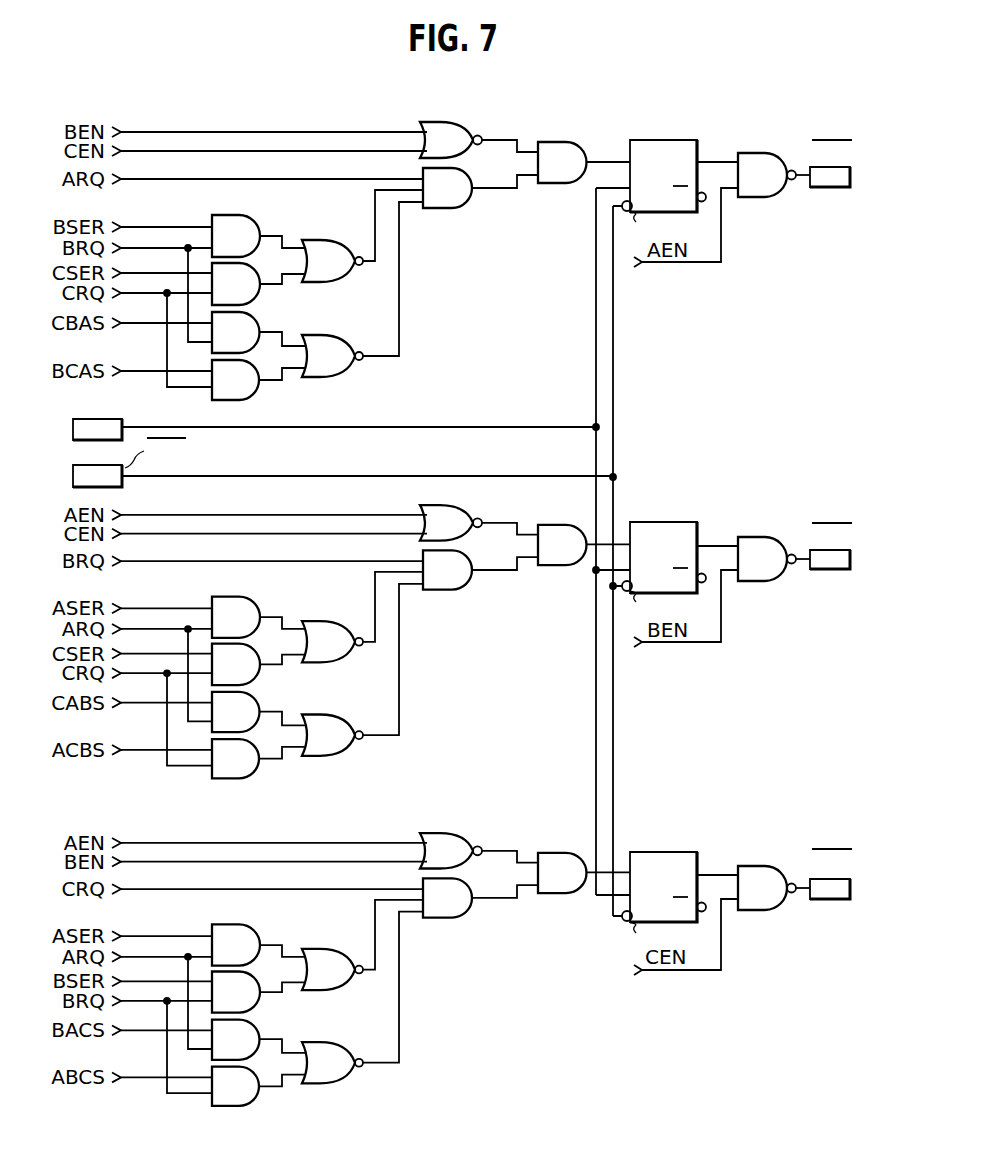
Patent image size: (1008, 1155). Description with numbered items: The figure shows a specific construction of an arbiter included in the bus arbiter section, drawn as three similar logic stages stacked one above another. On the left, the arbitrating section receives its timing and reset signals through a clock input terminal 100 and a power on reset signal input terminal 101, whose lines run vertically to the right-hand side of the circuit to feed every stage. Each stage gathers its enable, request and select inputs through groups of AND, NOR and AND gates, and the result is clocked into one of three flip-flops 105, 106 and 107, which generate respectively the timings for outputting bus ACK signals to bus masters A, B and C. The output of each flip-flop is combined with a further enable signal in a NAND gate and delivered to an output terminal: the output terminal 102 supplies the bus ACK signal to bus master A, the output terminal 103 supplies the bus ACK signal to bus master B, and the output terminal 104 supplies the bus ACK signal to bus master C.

The clock input terminal 100 is at (122, 425).
The power on reset signal input terminal 101 is at (123, 488).
The output terminal 102 is at (833, 188).
The output terminal 103 is at (833, 570).
The output terminal 104 is at (836, 900).
The flip-flop 105 is at (665, 148).
The flip-flop 106 is at (674, 521).
The flip-flop 107 is at (678, 853).